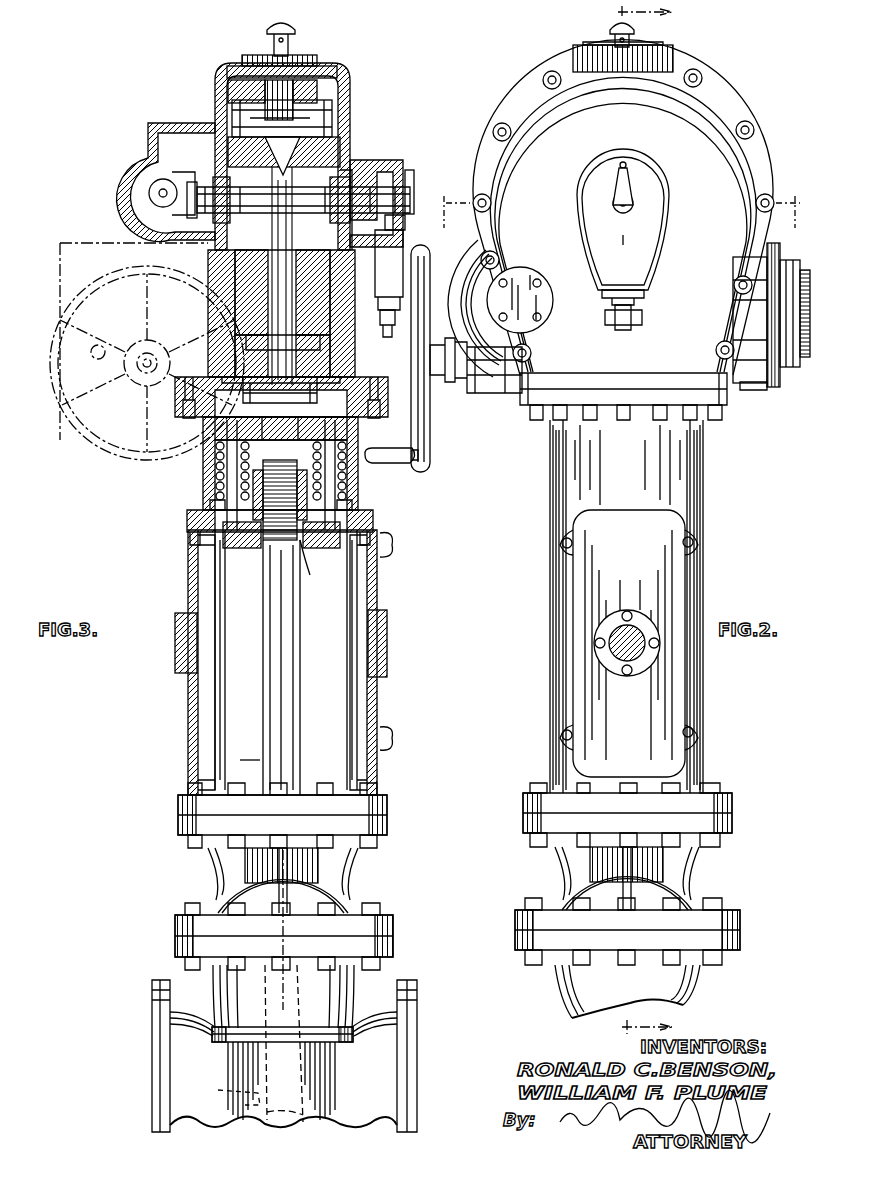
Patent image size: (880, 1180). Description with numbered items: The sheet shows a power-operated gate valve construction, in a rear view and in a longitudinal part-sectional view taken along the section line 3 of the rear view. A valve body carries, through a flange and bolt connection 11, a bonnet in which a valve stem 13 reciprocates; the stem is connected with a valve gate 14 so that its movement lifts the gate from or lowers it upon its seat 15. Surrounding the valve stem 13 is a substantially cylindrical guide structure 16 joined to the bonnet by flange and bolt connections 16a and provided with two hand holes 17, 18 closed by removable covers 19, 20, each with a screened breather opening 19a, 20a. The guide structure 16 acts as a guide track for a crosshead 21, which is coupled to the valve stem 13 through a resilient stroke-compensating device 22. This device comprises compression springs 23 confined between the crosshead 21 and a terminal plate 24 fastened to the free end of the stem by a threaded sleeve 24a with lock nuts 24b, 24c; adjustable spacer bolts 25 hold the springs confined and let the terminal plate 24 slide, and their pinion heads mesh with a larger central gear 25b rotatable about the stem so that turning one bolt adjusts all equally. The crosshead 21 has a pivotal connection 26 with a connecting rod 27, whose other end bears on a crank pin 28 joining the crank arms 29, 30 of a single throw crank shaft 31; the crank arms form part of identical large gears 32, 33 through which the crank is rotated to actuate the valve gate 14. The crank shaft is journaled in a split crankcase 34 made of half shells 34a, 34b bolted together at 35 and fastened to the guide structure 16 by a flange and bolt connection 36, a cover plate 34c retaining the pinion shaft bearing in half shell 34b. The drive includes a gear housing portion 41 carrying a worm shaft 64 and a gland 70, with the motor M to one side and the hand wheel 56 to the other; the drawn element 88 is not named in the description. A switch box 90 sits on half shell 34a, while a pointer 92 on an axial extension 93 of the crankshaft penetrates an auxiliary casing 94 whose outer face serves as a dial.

In FIG. 2, the section line 3 is at (645, 520).
In FIG. 3, the flange and bolt connection 11 is at (395, 940).
In FIG. 2, the flange and bolt connection 11 is at (740, 935).
In FIG. 3, the valve stem 13 is at (302, 665).
In FIG. 3, the valve gate 14 is at (230, 890).
In FIG. 2, the valve gate 14 is at (457, 215).
In FIG. 3, the seat 15 is at (220, 1091).
In FIG. 3, the cylindrical guide structure 16 is at (205, 482).
In FIG. 2, the cylindrical guide structure 16 is at (550, 490).
In FIG. 3, the flange and bolt connections 16a is at (390, 815).
In FIG. 2, the flange and bolt connections 16a is at (735, 815).
In FIG. 3, the hand hole 17 is at (210, 582).
In FIG. 3, the hand hole 18 is at (357, 580).
In FIG. 3, the removable cover 19 is at (190, 690).
In FIG. 3, the screened breather opening 19a is at (185, 645).
In FIG. 3, the removable cover 20 is at (377, 690).
In FIG. 2, the removable cover 20 is at (629, 643).
In FIG. 3, the screened breather opening 20a is at (387, 645).
In FIG. 2, the screened breather opening 20a is at (636, 625).
In FIG. 3, the crosshead 21 is at (213, 430).
In FIG. 3, the resilient stroke-compensating device 22 is at (347, 480).
In FIG. 3, the compression springs 23 is at (248, 475).
In FIG. 3, the terminal plate 24 is at (190, 520).
In FIG. 3, the threaded sleeve 24a is at (330, 548).
In FIG. 3, the lock nut 24b is at (240, 490).
In FIG. 3, the lock nut 24c is at (232, 520).
In FIG. 3, the adjustable spacer bolts 25 is at (328, 500).
In FIG. 3, the central gear 25b is at (319, 563).
In FIG. 3, the pivotal connection 26 is at (265, 380).
In FIG. 3, the connecting rod 27 is at (278, 295).
In FIG. 3, the crank pin 28 is at (330, 115).
In FIG. 3, the crank arm 29 is at (250, 160).
In FIG. 3, the crank arm 30 is at (340, 170).
In FIG. 3, the single throw crank shaft 31 is at (298, 200).
In FIG. 3, the large gear 32 is at (248, 270).
In FIG. 3, the large gear 33 is at (320, 310).
In FIG. 3, the split crankcase 34 is at (348, 70).
In FIG. 2, the split crankcase 34 is at (728, 85).
In FIG. 3, the half shell 34a is at (240, 60).
In FIG. 2, the half shell 34a is at (623, 47).
In FIG. 3, the half shell 34b is at (352, 70).
In FIG. 2, the half shell 34b is at (660, 250).
In FIG. 2, the cover plate 34c is at (540, 298).
In FIG. 2, the bolts 35 is at (548, 72).
In FIG. 3, the flange and bolt connection 36 is at (398, 412).
In FIG. 2, the flange and bolt connection 36 is at (520, 395).
In FIG. 2, the gear housing portion 41 is at (788, 214).
In FIG. 3, the hand wheel 56 is at (415, 460).
In FIG. 2, the hand wheel 56 is at (415, 455).
In FIG. 3, the worm shaft 64 is at (147, 351).
In FIG. 2, the worm shaft 64 is at (430, 300).
In FIG. 2, the gland 70 is at (450, 382).
In FIG. 2, the motor 88 is at (798, 385).
In FIG. 3, the switch box 90 is at (160, 130).
In FIG. 3, the pointer 92 is at (410, 185).
In FIG. 2, the pointer 92 is at (618, 182).
In FIG. 3, the axial extension 93 is at (400, 226).
In FIG. 3, the auxiliary casing 94 is at (403, 160).
In FIG. 2, the auxiliary casing 94 is at (585, 258).
In FIG. 2, the motor M is at (750, 390).